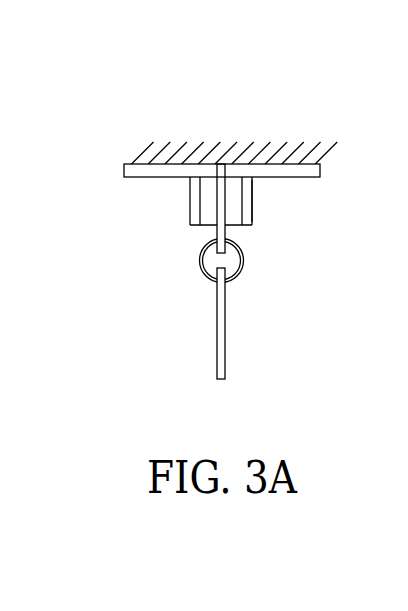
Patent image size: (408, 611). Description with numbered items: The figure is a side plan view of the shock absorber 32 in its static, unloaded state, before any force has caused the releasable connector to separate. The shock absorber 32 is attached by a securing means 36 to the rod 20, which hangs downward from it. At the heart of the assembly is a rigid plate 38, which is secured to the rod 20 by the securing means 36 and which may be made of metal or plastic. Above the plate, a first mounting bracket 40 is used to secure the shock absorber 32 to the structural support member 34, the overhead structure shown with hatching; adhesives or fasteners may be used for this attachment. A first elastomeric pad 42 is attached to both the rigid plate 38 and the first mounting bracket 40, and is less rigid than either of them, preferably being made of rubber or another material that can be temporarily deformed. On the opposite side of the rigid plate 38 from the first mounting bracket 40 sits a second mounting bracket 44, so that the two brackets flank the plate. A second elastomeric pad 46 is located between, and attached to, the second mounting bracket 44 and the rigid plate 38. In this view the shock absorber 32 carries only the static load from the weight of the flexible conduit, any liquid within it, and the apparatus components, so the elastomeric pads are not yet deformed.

The rod 20 is at (227, 358).
The shock absorber 32 is at (179, 277).
The structural support member 34 is at (235, 163).
The securing means 36 is at (243, 272).
The rigid plate 38 is at (215, 233).
The first mounting bracket 40 is at (148, 177).
The first elastomeric pad 42 is at (210, 203).
The second mounting bracket 44 is at (253, 195).
The second elastomeric pad 46 is at (233, 217).